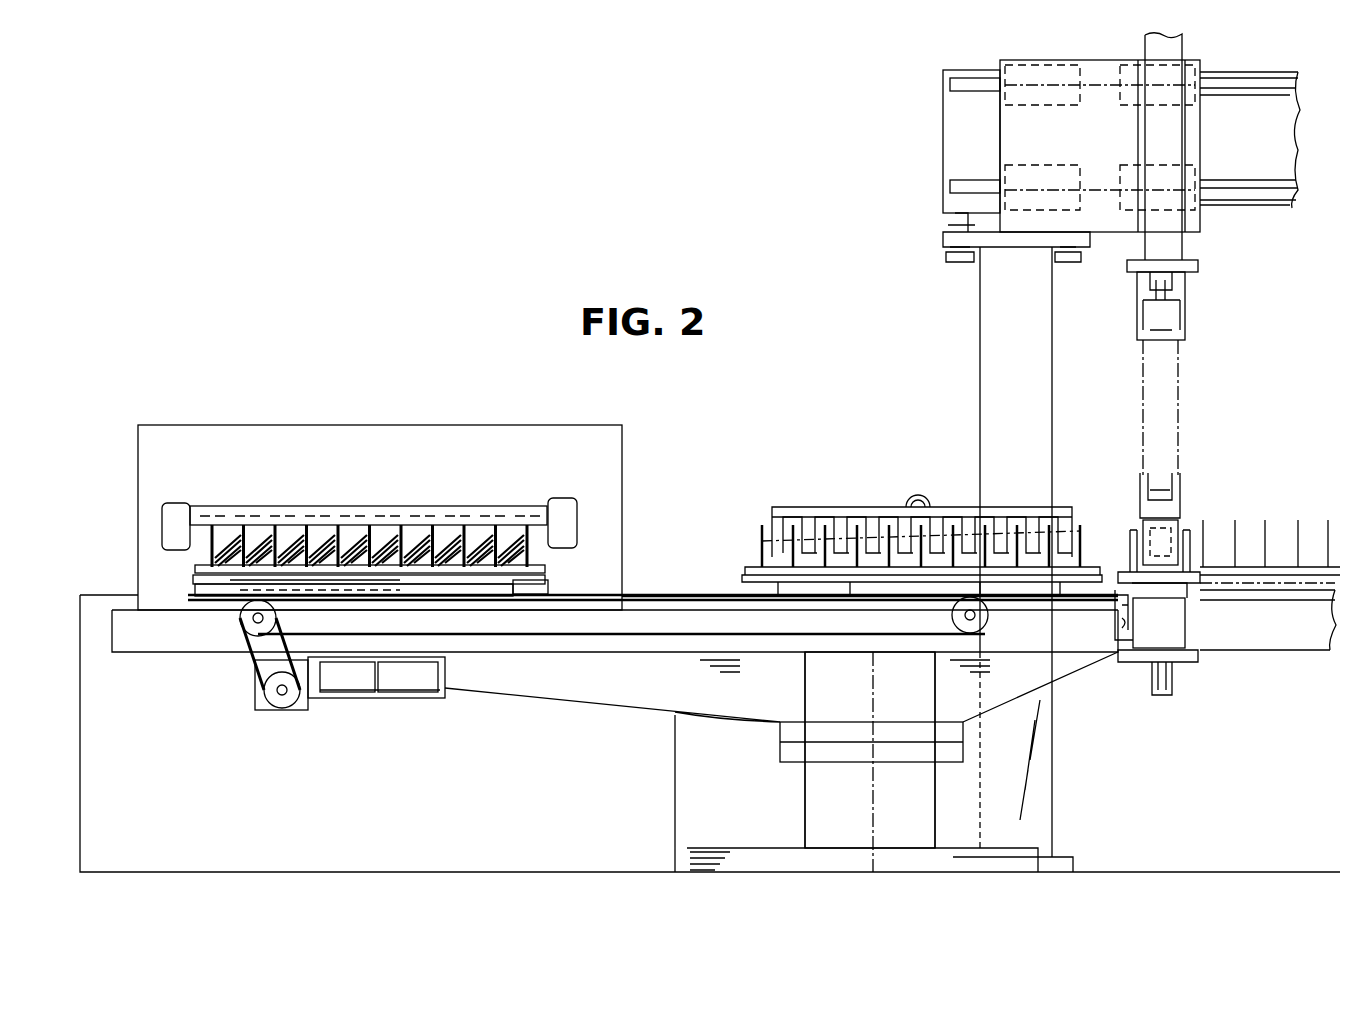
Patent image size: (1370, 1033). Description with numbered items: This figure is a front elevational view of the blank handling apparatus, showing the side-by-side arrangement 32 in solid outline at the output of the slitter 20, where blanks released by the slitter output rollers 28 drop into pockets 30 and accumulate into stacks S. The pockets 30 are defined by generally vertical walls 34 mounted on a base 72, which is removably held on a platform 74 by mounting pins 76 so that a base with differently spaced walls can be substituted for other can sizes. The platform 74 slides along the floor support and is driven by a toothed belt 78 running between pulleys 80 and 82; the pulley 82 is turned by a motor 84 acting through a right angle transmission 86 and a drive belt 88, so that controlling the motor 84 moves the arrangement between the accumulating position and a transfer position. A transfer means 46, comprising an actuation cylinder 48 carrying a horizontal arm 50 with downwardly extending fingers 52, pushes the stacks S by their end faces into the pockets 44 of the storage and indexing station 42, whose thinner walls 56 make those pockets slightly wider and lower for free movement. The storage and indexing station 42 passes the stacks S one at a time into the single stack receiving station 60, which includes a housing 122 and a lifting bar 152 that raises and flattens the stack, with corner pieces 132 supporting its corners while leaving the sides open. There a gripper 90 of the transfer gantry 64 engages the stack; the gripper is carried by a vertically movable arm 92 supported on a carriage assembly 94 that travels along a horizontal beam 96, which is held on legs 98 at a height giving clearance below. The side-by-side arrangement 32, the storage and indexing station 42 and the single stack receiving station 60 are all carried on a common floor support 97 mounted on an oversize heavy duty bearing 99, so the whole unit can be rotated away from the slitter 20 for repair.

The slitter 20 is at (446, 432).
The slitter output rollers 28 is at (230, 506).
The pockets 30 is at (320, 540).
The vertical walls 34 is at (280, 525).
The stacks S is at (385, 530).
The side-by-side arrangement 32 is at (193, 582).
The mounting pins 76 is at (195, 566).
The platform 74 is at (513, 578).
The base 72 is at (548, 572).
The toothed belt 78 is at (662, 594).
The pulley 82 is at (242, 626).
The right angle transmission 86 is at (270, 702).
The drive belt 88 is at (248, 662).
The motor 84 is at (412, 698).
The pulley 80 is at (988, 618).
The transfer means 46 is at (772, 508).
The horizontal arm 50 is at (808, 510).
The fingers 52 is at (762, 548).
The actuation cylinder 48 is at (918, 497).
The legs 98 is at (980, 348).
The carriage assembly 94 is at (995, 123).
The transfer gantry 64 is at (945, 178).
The vertically movable arm 92 is at (1172, 232).
The beam 96 is at (1250, 196).
The gripper 90 is at (1186, 322).
The corner pieces 132 is at (1140, 492).
The single stack receiving station 60 is at (1195, 522).
The housing 122 is at (1185, 632).
The lifting bar 152 is at (1172, 680).
The walls 56 is at (1328, 522).
The storage and indexing station 42 is at (1266, 525).
The pockets 44 is at (1299, 525).
The floor support 97 is at (805, 800).
The bearing 99 is at (780, 728).